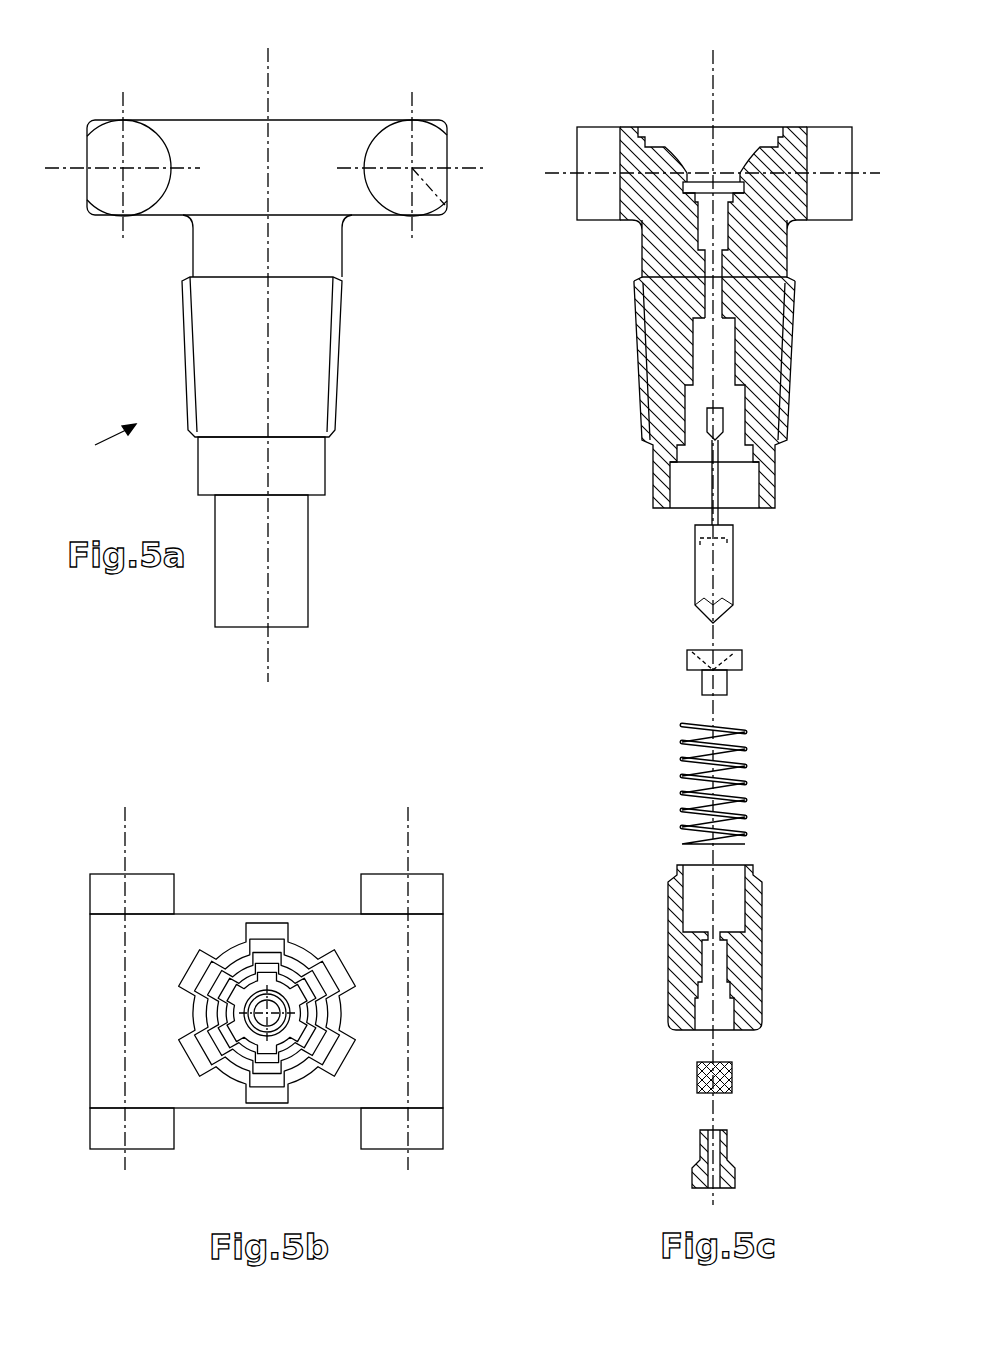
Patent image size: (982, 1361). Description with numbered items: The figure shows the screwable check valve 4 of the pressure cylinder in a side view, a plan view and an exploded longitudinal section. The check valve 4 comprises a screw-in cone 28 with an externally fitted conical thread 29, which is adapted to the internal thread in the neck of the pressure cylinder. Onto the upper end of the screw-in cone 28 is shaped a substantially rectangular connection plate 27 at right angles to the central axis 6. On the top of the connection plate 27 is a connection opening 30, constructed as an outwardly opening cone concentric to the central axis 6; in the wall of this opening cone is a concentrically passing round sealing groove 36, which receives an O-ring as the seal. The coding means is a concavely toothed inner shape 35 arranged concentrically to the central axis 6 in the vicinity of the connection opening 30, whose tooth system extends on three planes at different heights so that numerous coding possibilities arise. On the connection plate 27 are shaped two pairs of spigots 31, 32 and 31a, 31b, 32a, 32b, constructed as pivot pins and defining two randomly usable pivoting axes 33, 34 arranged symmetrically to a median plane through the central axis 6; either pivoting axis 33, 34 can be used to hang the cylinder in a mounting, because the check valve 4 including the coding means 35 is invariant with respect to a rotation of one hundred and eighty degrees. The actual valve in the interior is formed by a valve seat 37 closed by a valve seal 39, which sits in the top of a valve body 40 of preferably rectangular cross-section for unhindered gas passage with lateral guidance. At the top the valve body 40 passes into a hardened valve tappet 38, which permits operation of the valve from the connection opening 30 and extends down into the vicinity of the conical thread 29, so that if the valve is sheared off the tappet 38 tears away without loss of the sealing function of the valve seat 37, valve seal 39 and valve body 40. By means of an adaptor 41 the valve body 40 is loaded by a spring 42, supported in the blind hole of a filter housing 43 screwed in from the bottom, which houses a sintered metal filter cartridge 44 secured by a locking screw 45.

In FIG. 5a, the check valve 4 is at (104, 443).
In FIG. 5a, the central axis 6 is at (265, 90).
In FIG. 5b, the central axis 6 is at (252, 1036).
In FIG. 5a, the connection plate 27 is at (301, 138).
In FIG. 5b, the connection plate 27 is at (215, 928).
In FIG. 5c, the connection plate 27 is at (633, 140).
In FIG. 5a, the screw-in cone 28 is at (320, 248).
In FIG. 5c, the screw-in cone 28 is at (672, 230).
In FIG. 5a, the conical thread 29 is at (342, 355).
In FIG. 5c, the conical thread 29 is at (795, 330).
In FIG. 5b, the connection opening 30 is at (281, 1034).
In FIG. 5c, the connection opening 30 is at (723, 165).
In FIG. 5a, the spigot 31 is at (108, 140).
In FIG. 5b, the spigot 31a is at (107, 1134).
In FIG. 5c, the spigot 31a is at (835, 135).
In FIG. 5b, the spigot 31b is at (109, 887).
In FIG. 5c, the spigot 31b is at (597, 145).
In FIG. 5a, the spigot 32 is at (430, 145).
In FIG. 5b, the spigot 32a is at (430, 1136).
In FIG. 5b, the spigot 32b is at (426, 895).
In FIG. 5a, the pivoting axis 33 is at (123, 168).
In FIG. 5b, the pivoting axis 33 is at (124, 973).
In FIG. 5c, the pivoting axis 33 is at (560, 173).
In FIG. 5a, the pivoting axis 34 is at (447, 203).
In FIG. 5b, the pivoting axis 34 is at (408, 1012).
In FIG. 5b, the concavely toothed inner shape 35 is at (274, 934).
In FIG. 5c, the concavely toothed inner shape 35 is at (757, 145).
In FIG. 5c, the sealing groove 36 is at (740, 190).
In FIG. 5c, the valve seat 37 is at (700, 320).
In FIG. 5c, the valve tappet 38 is at (720, 481).
In FIG. 5c, the valve seal 39 is at (695, 545).
In FIG. 5c, the valve body 40 is at (725, 575).
In FIG. 5c, the adaptor 41 is at (687, 660).
In FIG. 5c, the spring 42 is at (745, 740).
In FIG. 5a, the filter housing 43 is at (292, 562).
In FIG. 5c, the filter housing 43 is at (680, 955).
In FIG. 5c, the sintered metal filter cartridge 44 is at (735, 1077).
In FIG. 5c, the locking screw 45 is at (733, 1170).